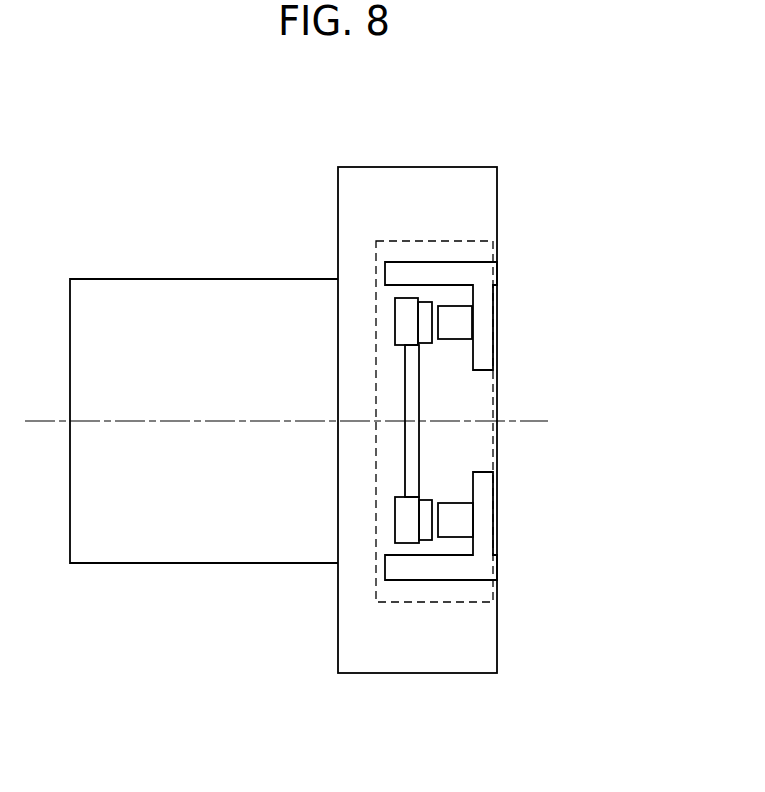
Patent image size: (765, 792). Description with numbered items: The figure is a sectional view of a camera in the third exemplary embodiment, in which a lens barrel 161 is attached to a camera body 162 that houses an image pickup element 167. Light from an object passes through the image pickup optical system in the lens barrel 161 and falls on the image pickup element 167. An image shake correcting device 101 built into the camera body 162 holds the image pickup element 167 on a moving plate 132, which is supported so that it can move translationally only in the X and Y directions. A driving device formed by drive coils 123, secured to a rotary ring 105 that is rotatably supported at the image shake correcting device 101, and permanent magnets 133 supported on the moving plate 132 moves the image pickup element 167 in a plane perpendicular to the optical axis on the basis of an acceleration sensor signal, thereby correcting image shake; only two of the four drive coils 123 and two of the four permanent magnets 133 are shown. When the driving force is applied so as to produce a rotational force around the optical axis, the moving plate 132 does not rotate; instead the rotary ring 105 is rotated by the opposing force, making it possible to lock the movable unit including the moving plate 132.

The image shake correcting device 101 is at (408, 603).
The rotary ring 105 is at (482, 297).
The drive coil 123 is at (453, 320).
The moving plate 132 is at (403, 528).
The permanent magnet 133 is at (425, 308).
The lens barrel 161 is at (208, 292).
The camera body 162 is at (488, 212).
The image pickup element 167 is at (412, 454).